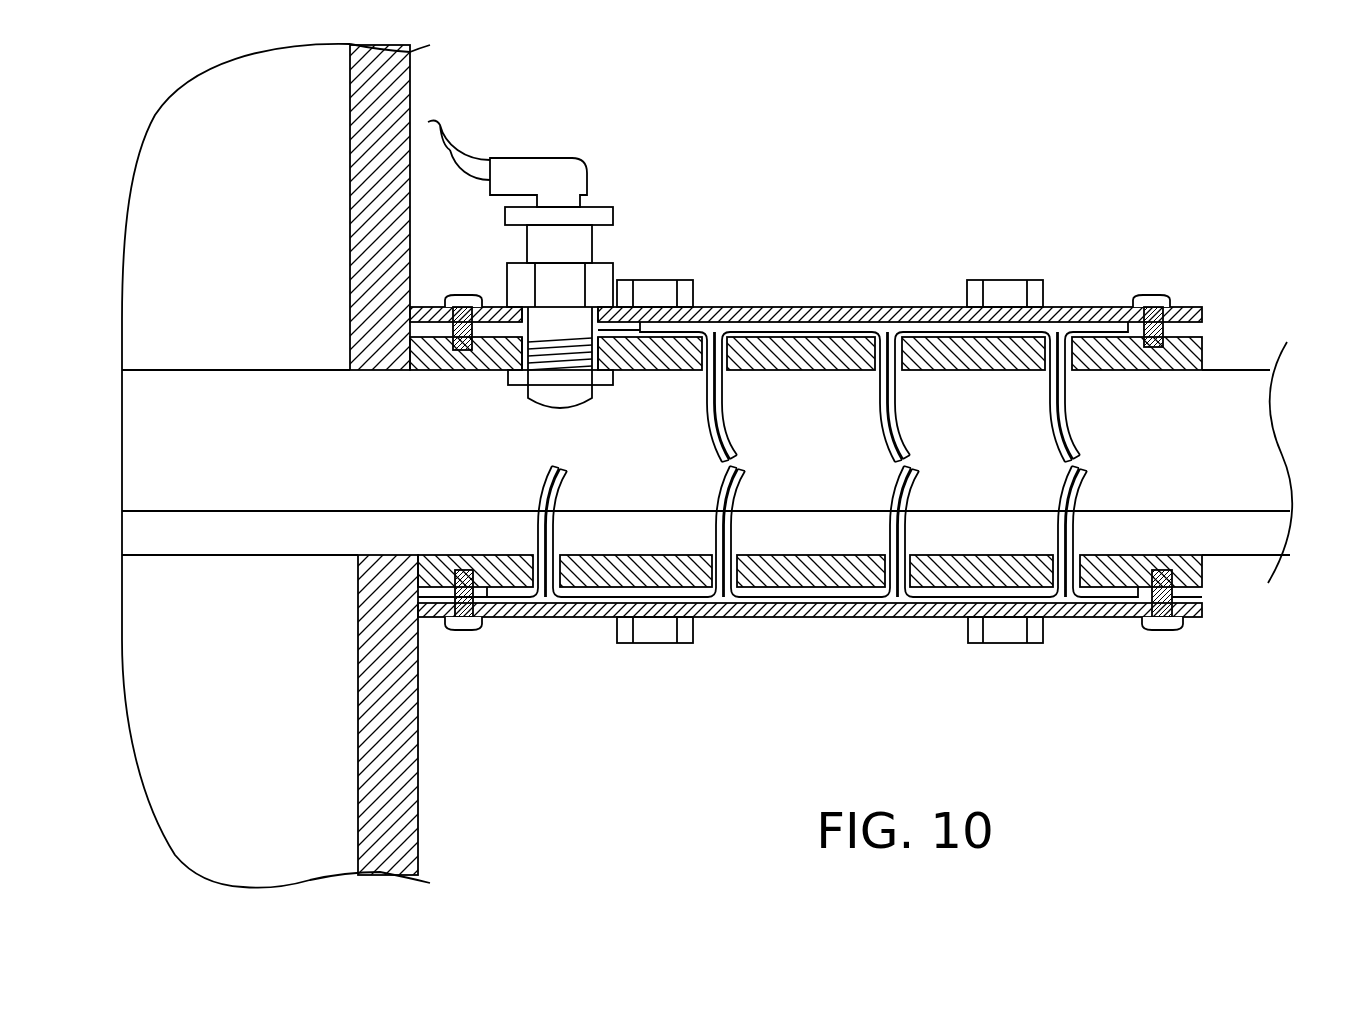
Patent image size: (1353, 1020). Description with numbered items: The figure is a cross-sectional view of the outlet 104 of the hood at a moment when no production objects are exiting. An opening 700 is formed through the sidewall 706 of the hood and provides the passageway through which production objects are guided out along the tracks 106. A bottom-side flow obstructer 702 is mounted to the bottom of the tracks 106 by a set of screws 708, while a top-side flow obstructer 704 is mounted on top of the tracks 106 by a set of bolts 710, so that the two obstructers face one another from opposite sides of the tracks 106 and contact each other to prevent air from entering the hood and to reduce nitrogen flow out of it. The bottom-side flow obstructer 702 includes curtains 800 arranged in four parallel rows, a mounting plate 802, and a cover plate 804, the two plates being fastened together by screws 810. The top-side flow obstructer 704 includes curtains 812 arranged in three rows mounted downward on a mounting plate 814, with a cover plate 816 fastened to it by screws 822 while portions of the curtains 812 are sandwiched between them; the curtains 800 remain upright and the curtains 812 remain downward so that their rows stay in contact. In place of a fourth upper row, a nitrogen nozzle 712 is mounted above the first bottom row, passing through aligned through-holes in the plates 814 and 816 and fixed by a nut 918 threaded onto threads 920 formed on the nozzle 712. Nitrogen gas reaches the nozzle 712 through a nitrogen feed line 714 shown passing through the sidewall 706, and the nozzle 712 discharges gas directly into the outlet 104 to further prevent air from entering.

The outlet 104 is at (1230, 217).
The tracks 106 is at (1222, 523).
The opening 700 is at (707, 466).
The bottom-side flow obstructer 702 is at (850, 619).
The top-side flow obstructer 704 is at (850, 307).
The sidewall 706 is at (360, 182).
The screws 708 is at (655, 630).
The bolts 710 is at (668, 283).
The nitrogen nozzle 712 is at (555, 265).
The nitrogen feed line 714 is at (463, 153).
The curtains 800 is at (842, 598).
The mounting plate 802 is at (780, 577).
The cover plate 804 is at (563, 618).
The screws 810 is at (460, 628).
The curtains 812 is at (928, 330).
The mounting plate 814 is at (858, 345).
The cover plate 816 is at (755, 310).
The screws 822 is at (460, 300).
The nut 918 is at (510, 378).
The threads 920 is at (555, 352).